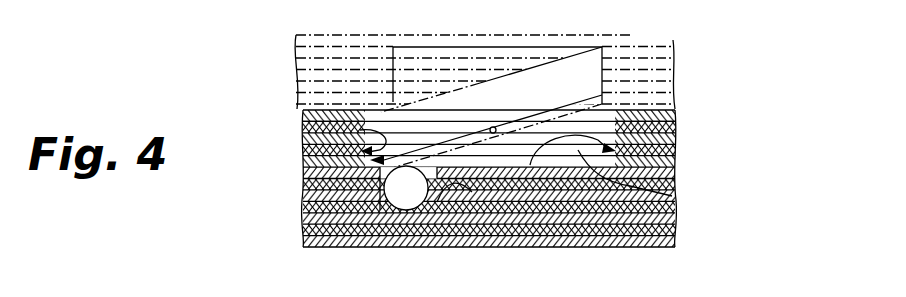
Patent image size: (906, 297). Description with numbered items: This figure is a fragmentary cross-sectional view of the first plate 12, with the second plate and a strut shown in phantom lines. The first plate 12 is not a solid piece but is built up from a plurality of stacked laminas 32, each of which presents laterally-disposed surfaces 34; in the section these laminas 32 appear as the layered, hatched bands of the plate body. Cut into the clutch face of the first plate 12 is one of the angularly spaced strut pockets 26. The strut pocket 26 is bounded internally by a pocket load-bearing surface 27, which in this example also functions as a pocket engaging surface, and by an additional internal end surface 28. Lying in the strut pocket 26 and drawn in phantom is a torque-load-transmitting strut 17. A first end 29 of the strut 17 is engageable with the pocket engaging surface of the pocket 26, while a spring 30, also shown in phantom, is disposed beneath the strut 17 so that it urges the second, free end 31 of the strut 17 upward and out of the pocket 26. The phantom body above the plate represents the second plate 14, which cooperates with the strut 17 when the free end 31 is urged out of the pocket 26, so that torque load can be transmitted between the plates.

The first plate 12 is at (673, 210).
The upper member 14 is at (632, 36).
The torque-load-transmitting strut 17 is at (437, 100).
The strut pocket 26 is at (677, 139).
The pocket load-bearing surface 27 is at (400, 210).
The end surface 28 is at (485, 205).
The first end 29 is at (363, 128).
The spring 30 is at (383, 208).
The second, free end 31 is at (603, 80).
The lamina 32 is at (303, 129).
The laterally-disposed surface 34 is at (303, 157).